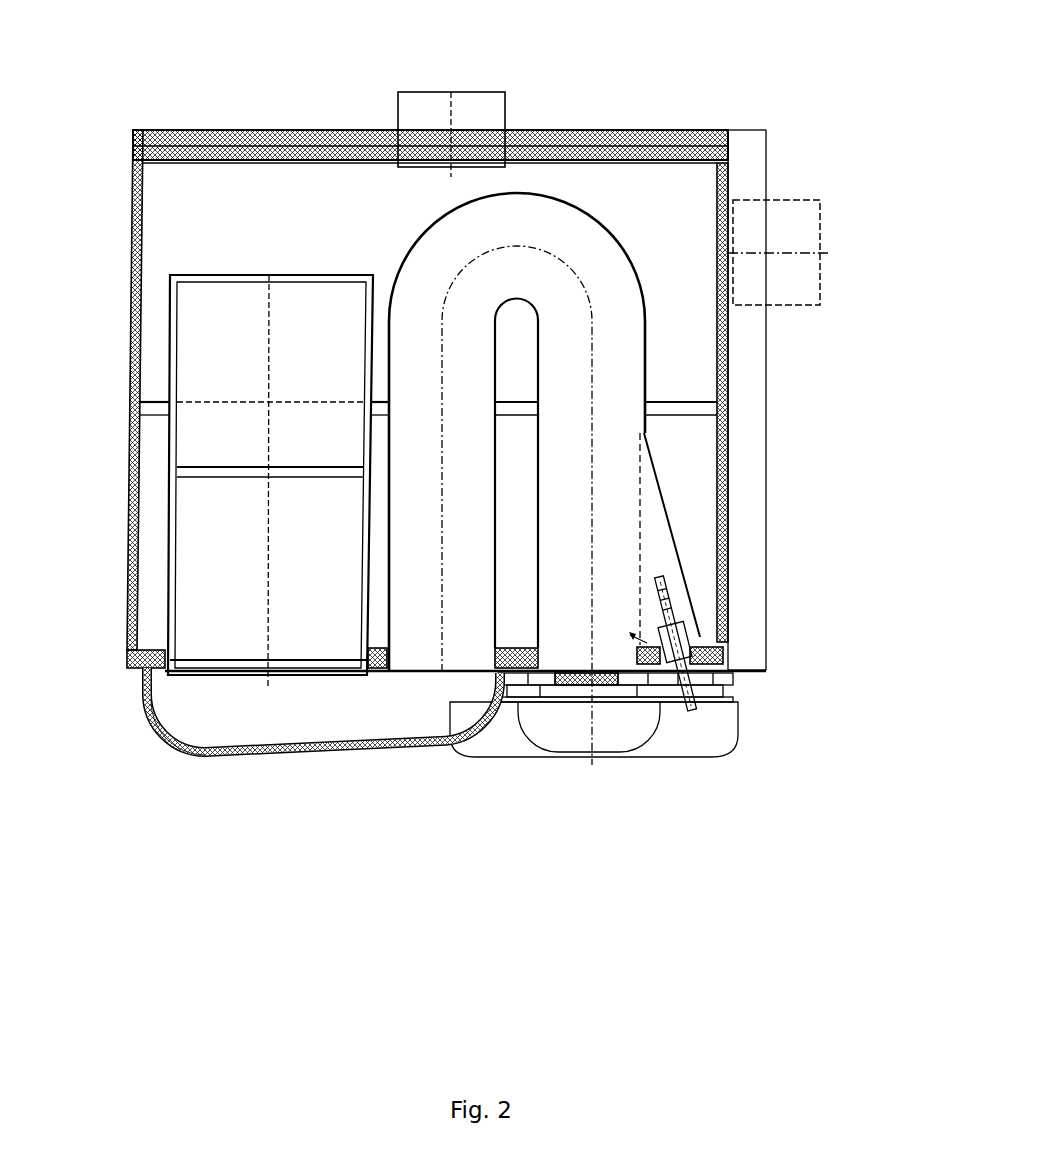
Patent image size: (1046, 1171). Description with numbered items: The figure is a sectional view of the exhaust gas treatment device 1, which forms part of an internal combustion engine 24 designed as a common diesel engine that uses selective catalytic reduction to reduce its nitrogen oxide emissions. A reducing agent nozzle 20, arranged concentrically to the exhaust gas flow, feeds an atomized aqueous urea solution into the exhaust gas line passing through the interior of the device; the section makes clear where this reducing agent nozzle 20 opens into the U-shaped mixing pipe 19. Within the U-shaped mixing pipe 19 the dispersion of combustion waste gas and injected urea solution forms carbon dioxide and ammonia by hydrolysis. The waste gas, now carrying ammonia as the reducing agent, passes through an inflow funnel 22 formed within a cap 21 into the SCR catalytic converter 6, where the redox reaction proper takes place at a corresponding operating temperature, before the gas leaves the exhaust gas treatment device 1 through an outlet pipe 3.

The exhaust gas treatment device 1 is at (267, 96).
The outlet pipe 3 is at (430, 104).
The SCR catalytic converter 6 is at (231, 276).
The U-shaped mixing pipe 19 is at (659, 534).
The reducing agent nozzle 20 is at (688, 637).
The cap 21 is at (147, 707).
The inflow funnel 22 is at (176, 745).
The internal combustion engine 24 is at (758, 37).